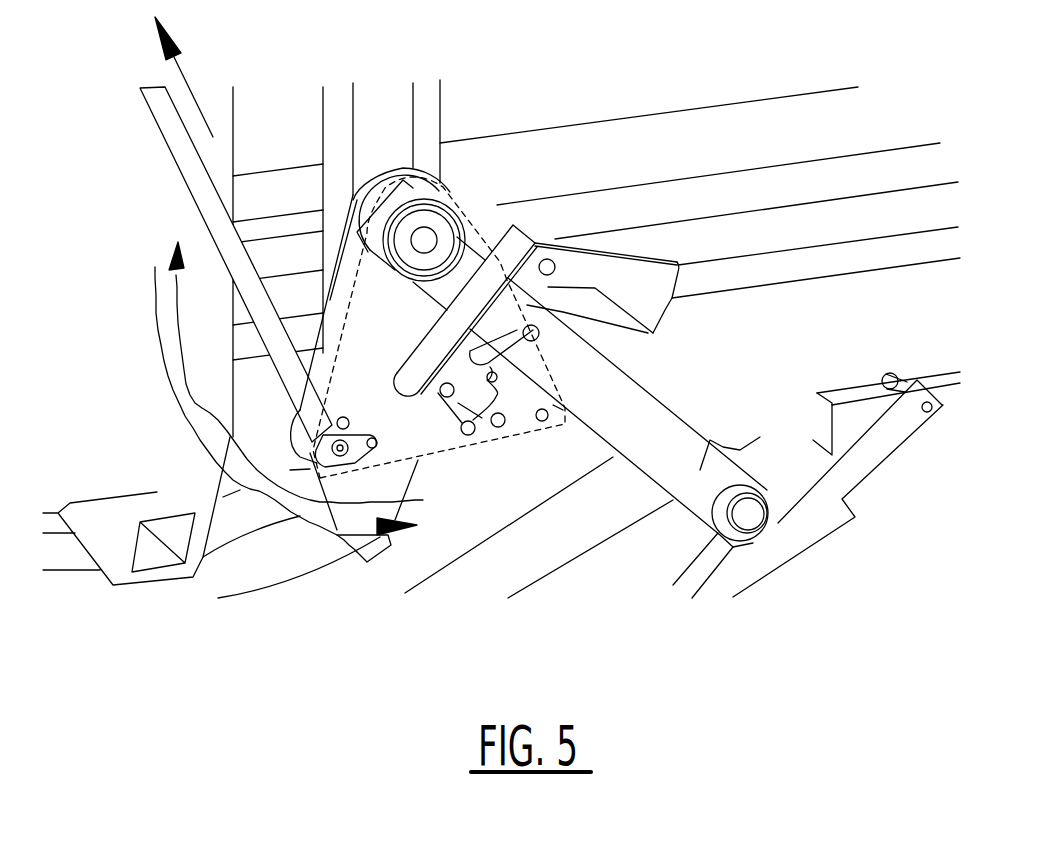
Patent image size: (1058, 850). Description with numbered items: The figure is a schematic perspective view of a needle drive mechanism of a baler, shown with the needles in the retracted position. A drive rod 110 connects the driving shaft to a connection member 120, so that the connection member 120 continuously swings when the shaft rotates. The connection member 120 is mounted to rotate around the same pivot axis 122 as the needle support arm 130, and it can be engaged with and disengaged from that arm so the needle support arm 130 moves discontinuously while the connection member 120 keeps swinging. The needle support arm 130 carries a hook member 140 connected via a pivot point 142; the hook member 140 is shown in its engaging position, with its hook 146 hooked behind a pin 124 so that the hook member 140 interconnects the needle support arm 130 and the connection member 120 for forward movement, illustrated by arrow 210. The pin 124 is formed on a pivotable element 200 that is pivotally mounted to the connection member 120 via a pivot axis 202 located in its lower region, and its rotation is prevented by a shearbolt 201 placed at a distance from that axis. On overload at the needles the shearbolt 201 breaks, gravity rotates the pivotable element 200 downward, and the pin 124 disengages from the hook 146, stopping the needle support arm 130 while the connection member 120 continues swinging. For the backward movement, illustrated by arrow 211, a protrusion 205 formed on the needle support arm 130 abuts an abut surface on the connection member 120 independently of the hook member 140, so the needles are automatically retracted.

The drive rod 110 is at (165, 112).
The connection member 120 is at (347, 325).
The pivot axis 122 is at (430, 238).
The pin 124 is at (492, 372).
The needle support arm 130 is at (683, 418).
The hook member 140 is at (650, 313).
The pivot point 142 is at (548, 259).
The hook 146 is at (452, 412).
The pivotable element 200 is at (545, 421).
The shearbolt 201 is at (562, 412).
The pivot axis 202 is at (500, 426).
The protrusion 205 is at (537, 328).
The arrow 210 is at (193, 368).
The arrow 211 is at (170, 395).